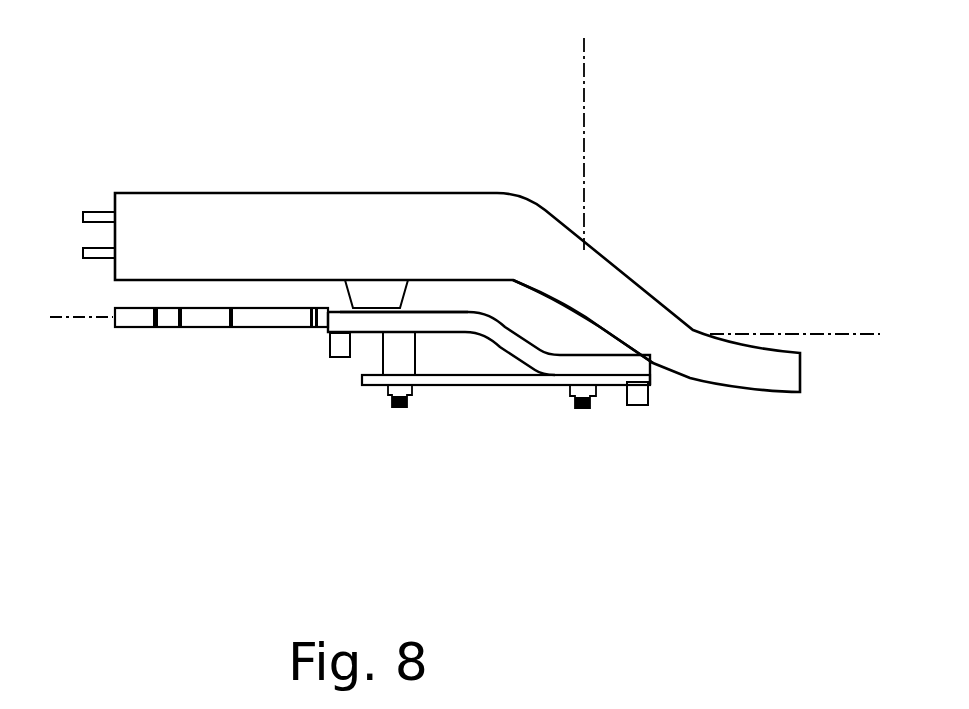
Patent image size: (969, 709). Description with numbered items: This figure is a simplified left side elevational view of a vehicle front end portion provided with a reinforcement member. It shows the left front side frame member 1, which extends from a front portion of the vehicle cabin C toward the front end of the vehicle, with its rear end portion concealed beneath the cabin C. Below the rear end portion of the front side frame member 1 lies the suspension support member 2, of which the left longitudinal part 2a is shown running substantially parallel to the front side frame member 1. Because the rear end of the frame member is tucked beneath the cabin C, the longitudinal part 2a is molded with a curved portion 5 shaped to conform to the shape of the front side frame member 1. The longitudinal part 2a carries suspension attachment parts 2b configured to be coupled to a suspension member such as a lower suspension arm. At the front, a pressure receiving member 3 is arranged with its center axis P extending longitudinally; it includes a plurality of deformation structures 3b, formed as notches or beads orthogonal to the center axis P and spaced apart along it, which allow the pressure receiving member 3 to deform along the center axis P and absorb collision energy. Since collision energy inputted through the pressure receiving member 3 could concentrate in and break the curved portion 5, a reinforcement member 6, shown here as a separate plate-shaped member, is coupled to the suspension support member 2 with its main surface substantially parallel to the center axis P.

The front side frame member 1 is at (318, 194).
The suspension support member 2 is at (473, 332).
The longitudinal part 2a is at (422, 323).
The suspension attachment part 2b is at (328, 358).
The pressure receiving member 3 is at (222, 332).
The deformation structure 3b is at (180, 328).
The curved portion 5 is at (497, 327).
The reinforcement member 6 is at (524, 387).
The vehicle cabin C is at (566, 54).
The center axis P is at (449, 319).